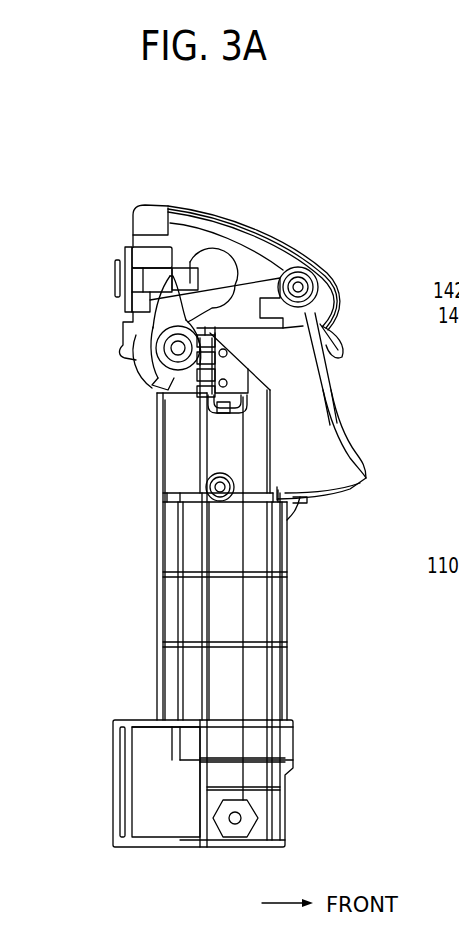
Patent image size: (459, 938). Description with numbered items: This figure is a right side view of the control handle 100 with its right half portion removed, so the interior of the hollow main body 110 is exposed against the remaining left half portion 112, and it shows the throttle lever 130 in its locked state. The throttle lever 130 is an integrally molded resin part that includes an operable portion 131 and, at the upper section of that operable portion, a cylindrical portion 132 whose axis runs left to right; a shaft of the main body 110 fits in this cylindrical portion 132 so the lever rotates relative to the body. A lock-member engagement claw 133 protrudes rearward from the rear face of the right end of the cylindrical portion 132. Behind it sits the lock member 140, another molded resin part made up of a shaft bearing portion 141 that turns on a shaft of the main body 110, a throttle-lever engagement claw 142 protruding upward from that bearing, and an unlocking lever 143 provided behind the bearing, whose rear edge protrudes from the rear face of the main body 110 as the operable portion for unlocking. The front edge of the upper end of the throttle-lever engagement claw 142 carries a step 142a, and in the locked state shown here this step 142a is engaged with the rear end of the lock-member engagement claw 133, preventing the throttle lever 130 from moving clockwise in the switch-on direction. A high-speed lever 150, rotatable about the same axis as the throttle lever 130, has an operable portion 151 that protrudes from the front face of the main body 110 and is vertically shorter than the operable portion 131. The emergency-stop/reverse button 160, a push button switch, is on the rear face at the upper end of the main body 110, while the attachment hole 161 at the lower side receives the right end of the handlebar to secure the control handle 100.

The control handle 100 is at (116, 158).
The main body 110 is at (162, 556).
The left half portion 112 is at (160, 555).
The throttle lever 130 is at (352, 302).
The operable portion 131 is at (323, 450).
The cylindrical portion 132 is at (304, 258).
The lock-member engagement claw 133 is at (218, 312).
The lock member 140 is at (112, 325).
The shaft bearing portion 141 is at (147, 390).
The throttle-lever engagement claw 142 is at (171, 258).
The step 142a is at (145, 296).
The unlocking lever 143 is at (120, 350).
The high-speed lever 150 is at (378, 358).
The operable portion 151 is at (328, 358).
The emergency-stop/reverse button 160 is at (115, 258).
The attachment hole 161 is at (177, 840).